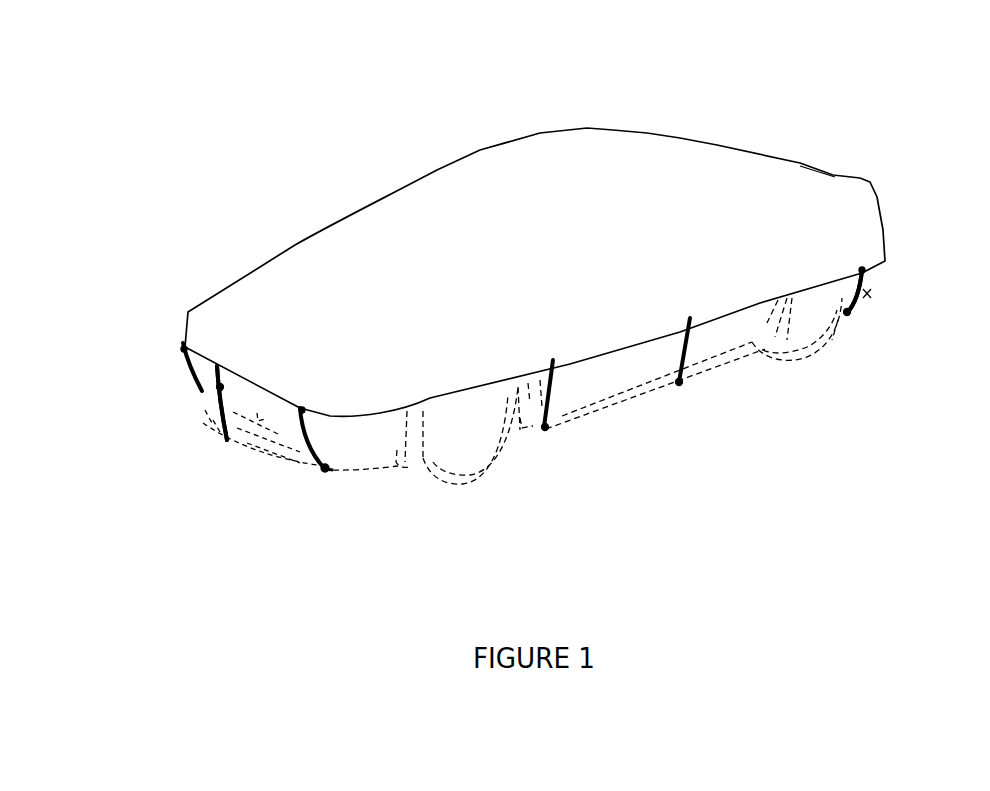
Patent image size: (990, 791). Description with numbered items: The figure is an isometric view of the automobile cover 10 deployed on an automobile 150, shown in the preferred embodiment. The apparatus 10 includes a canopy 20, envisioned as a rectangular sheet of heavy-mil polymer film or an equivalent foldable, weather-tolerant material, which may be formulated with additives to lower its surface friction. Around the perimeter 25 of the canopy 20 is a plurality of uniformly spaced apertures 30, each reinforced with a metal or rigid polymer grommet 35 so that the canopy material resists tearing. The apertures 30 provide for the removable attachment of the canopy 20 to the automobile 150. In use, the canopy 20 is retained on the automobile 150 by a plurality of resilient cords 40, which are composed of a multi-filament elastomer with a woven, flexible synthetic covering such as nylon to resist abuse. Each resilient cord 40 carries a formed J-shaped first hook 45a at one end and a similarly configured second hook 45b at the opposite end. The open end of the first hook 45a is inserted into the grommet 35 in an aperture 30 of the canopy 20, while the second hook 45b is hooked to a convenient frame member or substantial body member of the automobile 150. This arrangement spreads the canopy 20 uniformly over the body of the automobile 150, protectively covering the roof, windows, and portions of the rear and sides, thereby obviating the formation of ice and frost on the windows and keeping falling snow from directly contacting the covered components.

The automobile cover 10 is at (194, 154).
The canopy 20 is at (293, 253).
The perimeter 25 is at (248, 397).
The apertures 30 is at (301, 407).
The grommets 35 is at (539, 355).
The resilient cords 40 is at (207, 409).
The first hook 45a is at (219, 387).
The second hook 45b is at (324, 471).
The automobile 150 is at (869, 296).